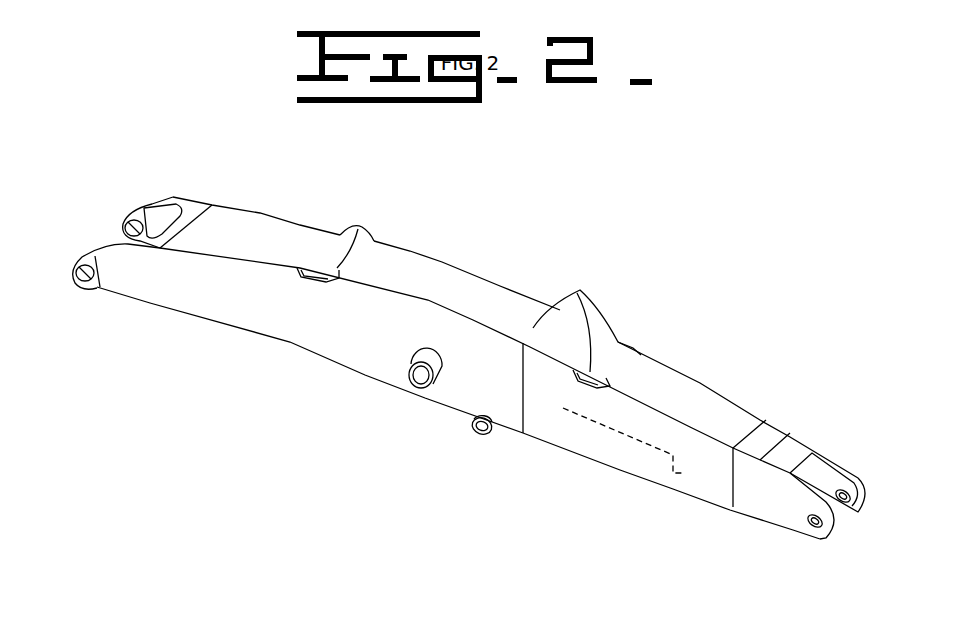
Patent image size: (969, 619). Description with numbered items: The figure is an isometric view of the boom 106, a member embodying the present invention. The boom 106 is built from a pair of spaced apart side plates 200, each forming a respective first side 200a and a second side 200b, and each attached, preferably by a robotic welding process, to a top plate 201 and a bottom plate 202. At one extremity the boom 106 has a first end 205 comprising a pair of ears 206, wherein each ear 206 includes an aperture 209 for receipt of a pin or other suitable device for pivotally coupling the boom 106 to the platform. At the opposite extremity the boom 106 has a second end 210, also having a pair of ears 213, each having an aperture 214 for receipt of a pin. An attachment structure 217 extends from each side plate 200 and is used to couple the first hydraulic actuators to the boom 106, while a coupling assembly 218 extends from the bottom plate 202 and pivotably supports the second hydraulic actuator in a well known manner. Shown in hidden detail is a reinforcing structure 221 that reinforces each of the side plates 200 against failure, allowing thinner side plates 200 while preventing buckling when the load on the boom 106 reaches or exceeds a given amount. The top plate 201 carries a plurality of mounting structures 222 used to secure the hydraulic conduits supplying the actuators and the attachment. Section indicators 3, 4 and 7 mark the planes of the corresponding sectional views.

The boom 106 is at (670, 281).
The side plates 200 is at (470, 280).
The first side 200a is at (250, 318).
The second side 200b is at (263, 213).
The top plate 201 is at (293, 230).
The bottom plate 202 is at (293, 343).
The first end 205 is at (173, 197).
The ears 206 is at (127, 207).
The aperture 209 is at (131, 227).
The second end 210 is at (698, 532).
The ears 213 is at (838, 464).
The aperture 214 is at (843, 503).
The attachment structure 217 is at (408, 371).
The coupling assembly 218 is at (473, 430).
The reinforcing structure 221 is at (646, 448).
The mounting structures 222 is at (364, 222).
The section line 3- 3 is at (503, 230).
The section line 4- 4 is at (560, 388).
The section line 7- 7 is at (653, 338).